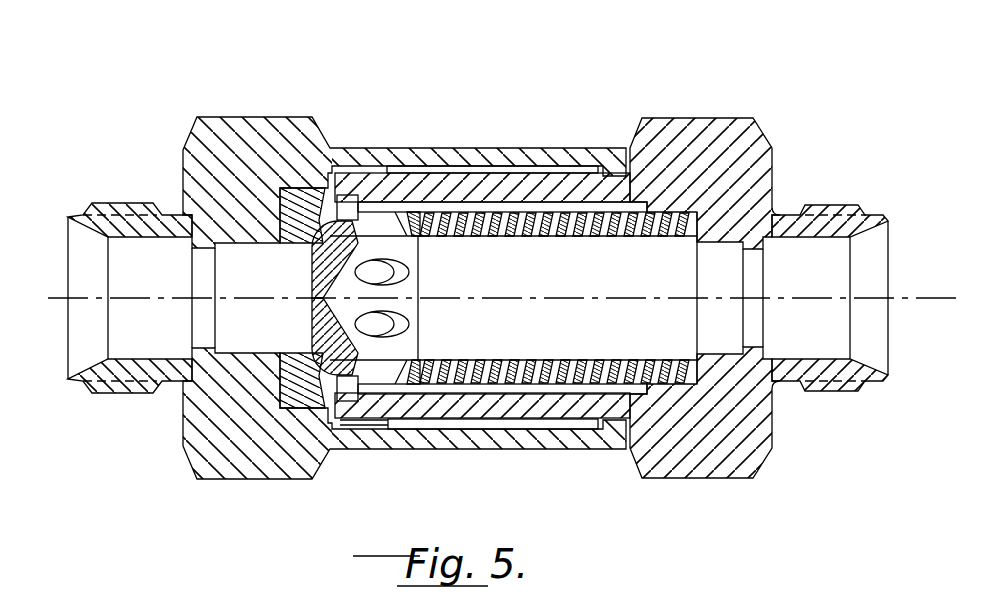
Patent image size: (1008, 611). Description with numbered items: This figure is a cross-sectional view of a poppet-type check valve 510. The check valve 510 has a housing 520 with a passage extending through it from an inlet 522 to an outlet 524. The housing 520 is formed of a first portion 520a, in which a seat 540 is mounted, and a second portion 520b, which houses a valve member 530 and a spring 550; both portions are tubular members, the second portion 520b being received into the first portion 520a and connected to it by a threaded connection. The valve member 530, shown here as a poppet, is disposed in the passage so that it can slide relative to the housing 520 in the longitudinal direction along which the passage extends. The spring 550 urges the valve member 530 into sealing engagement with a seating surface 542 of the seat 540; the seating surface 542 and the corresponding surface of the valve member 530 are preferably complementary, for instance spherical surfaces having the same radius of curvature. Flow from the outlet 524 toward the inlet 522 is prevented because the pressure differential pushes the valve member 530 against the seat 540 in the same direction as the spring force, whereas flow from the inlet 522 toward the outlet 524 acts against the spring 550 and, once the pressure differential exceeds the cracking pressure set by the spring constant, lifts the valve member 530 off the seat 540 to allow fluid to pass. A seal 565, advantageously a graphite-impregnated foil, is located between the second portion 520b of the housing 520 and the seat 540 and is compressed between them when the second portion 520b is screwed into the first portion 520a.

The check valve 510 is at (595, 108).
The housing 520 is at (478, 288).
The first portion 520a is at (258, 478).
The second portion 520b is at (717, 476).
The inlet 522 is at (88, 268).
The outlet 524 is at (882, 243).
The valve member 530 is at (345, 210).
The seat 540 is at (303, 197).
The seating surface 542 is at (323, 253).
The spring 550 is at (482, 214).
The seal 565 is at (388, 421).